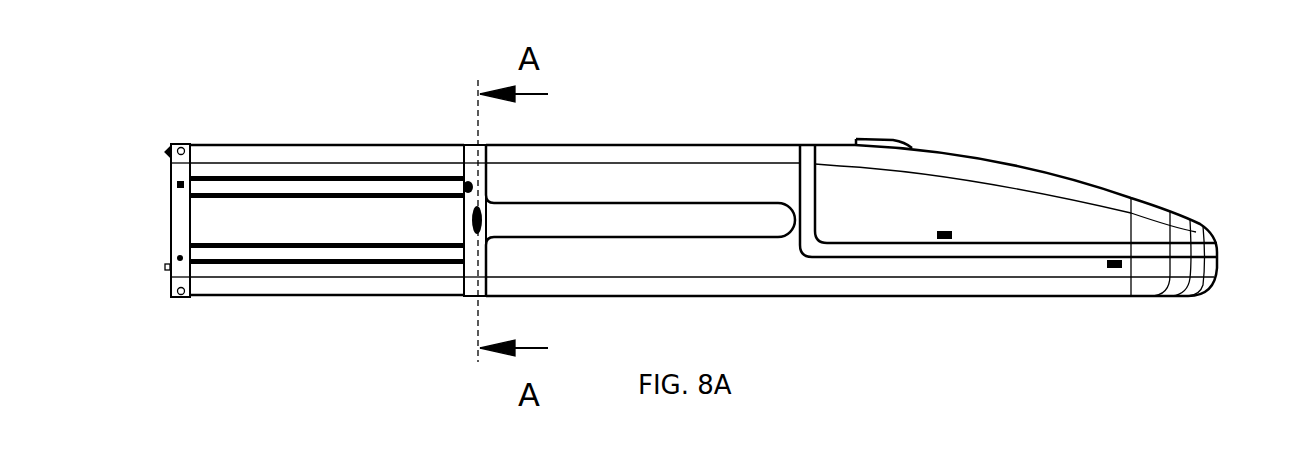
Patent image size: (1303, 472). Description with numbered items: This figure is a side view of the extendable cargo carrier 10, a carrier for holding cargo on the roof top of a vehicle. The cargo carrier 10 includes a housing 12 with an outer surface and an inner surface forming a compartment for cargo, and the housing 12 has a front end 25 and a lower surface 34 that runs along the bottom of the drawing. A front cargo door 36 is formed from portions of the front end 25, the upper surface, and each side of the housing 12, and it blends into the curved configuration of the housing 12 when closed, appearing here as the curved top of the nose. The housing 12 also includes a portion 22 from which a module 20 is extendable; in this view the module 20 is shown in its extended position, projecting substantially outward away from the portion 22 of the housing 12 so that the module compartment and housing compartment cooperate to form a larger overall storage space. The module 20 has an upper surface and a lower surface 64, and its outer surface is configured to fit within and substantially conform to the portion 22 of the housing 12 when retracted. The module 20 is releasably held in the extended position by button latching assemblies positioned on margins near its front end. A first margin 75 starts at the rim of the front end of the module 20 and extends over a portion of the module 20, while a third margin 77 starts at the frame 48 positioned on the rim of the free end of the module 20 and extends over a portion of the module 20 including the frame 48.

The cargo carrier 10 is at (687, 104).
The housing 12 is at (1010, 285).
The module 20 is at (322, 155).
The portion of the housing 22 is at (778, 163).
The front end 25 is at (1218, 268).
The lower surface 34 is at (722, 297).
The front cargo door 36 is at (978, 172).
The frame 48 is at (180, 237).
The lower surface of the module 64 is at (330, 296).
The first margin 75 is at (468, 205).
The third margin 77 is at (182, 200).